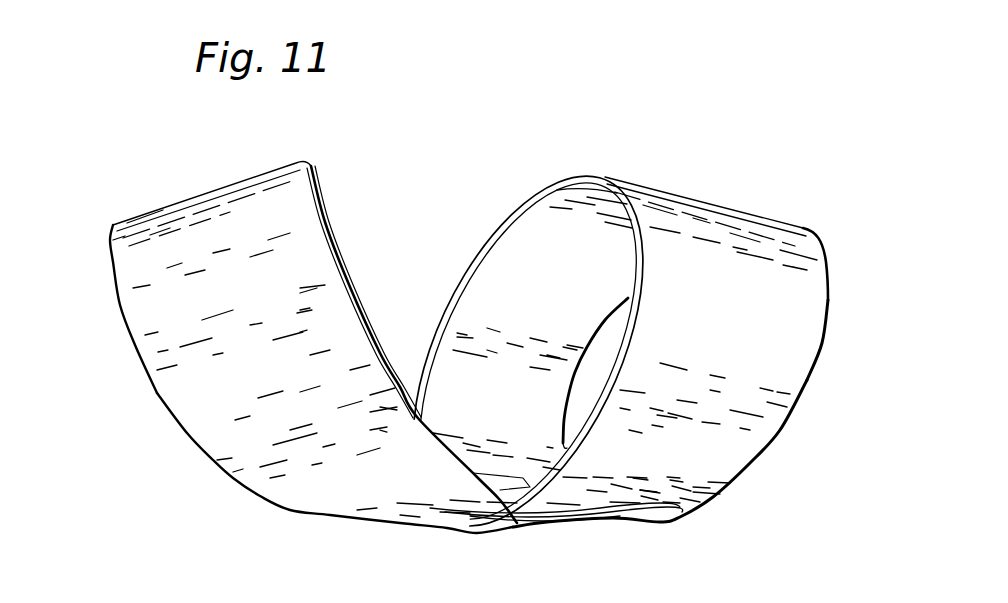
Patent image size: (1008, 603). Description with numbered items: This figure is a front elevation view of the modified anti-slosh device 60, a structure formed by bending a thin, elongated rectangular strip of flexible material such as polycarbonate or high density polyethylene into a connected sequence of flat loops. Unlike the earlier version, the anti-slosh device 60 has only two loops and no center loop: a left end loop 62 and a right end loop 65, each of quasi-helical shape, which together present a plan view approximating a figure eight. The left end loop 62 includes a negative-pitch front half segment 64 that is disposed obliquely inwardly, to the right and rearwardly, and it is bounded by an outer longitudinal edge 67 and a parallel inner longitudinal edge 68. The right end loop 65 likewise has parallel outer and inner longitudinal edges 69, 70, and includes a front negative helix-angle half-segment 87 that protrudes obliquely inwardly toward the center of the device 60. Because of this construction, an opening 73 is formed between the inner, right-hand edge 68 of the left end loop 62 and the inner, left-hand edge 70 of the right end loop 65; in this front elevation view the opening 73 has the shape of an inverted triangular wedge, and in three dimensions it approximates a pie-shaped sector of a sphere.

The anti-slosh device 60 is at (750, 173).
The left end loop 62 is at (200, 190).
The front half segment 64 is at (210, 409).
The right end loop 65 is at (823, 247).
The outer longitudinal edge 67 is at (113, 277).
The inner longitudinal edge 68 is at (318, 168).
The outer longitudinal edge 69 is at (823, 340).
The inner longitudinal edge 70 is at (598, 178).
The opening 73 is at (442, 204).
The front negative helix-angle half-segment 87 is at (772, 418).